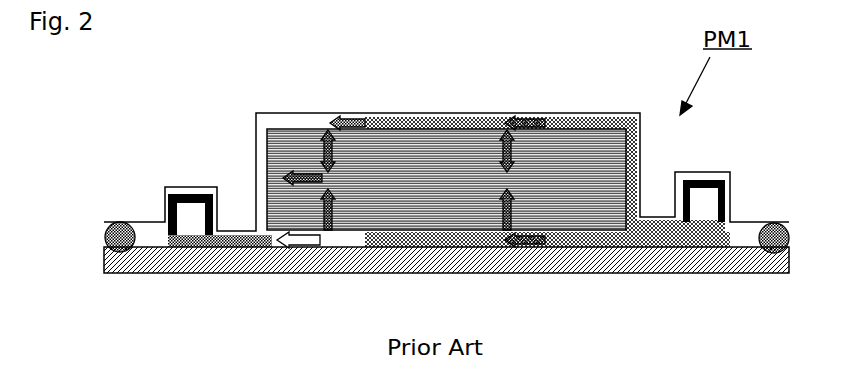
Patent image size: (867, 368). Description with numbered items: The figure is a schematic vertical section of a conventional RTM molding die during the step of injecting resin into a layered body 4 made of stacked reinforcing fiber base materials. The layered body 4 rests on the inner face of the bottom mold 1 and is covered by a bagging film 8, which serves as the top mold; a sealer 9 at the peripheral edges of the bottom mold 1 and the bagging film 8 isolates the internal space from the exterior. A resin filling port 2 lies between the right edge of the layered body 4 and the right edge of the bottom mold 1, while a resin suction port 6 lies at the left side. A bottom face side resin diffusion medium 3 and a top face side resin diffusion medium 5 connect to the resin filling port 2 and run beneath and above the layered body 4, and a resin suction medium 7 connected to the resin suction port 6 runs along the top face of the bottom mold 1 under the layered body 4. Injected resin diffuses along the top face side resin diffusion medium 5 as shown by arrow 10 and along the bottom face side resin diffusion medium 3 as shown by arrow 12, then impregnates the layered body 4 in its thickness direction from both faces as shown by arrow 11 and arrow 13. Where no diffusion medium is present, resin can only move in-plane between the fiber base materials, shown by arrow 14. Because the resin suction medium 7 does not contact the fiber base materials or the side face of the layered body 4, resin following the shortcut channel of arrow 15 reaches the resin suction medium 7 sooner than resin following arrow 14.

The bottom mold 1 is at (212, 256).
The resin filling port 2 is at (712, 180).
The bottom face side resin diffusion medium 3 is at (662, 242).
The layered body 4 is at (440, 165).
The top face side resin diffusion medium 5 is at (610, 120).
The resin suction port 6 is at (187, 195).
The resin suction medium 7 is at (192, 242).
The bagging film 8 is at (253, 121).
The sealer 9 is at (103, 233).
The arrow 10 is at (516, 129).
The arrow 11 is at (505, 145).
The arrow 12 is at (530, 238).
The arrow 13 is at (508, 217).
The arrow 14 is at (297, 178).
The arrow 15 is at (300, 240).